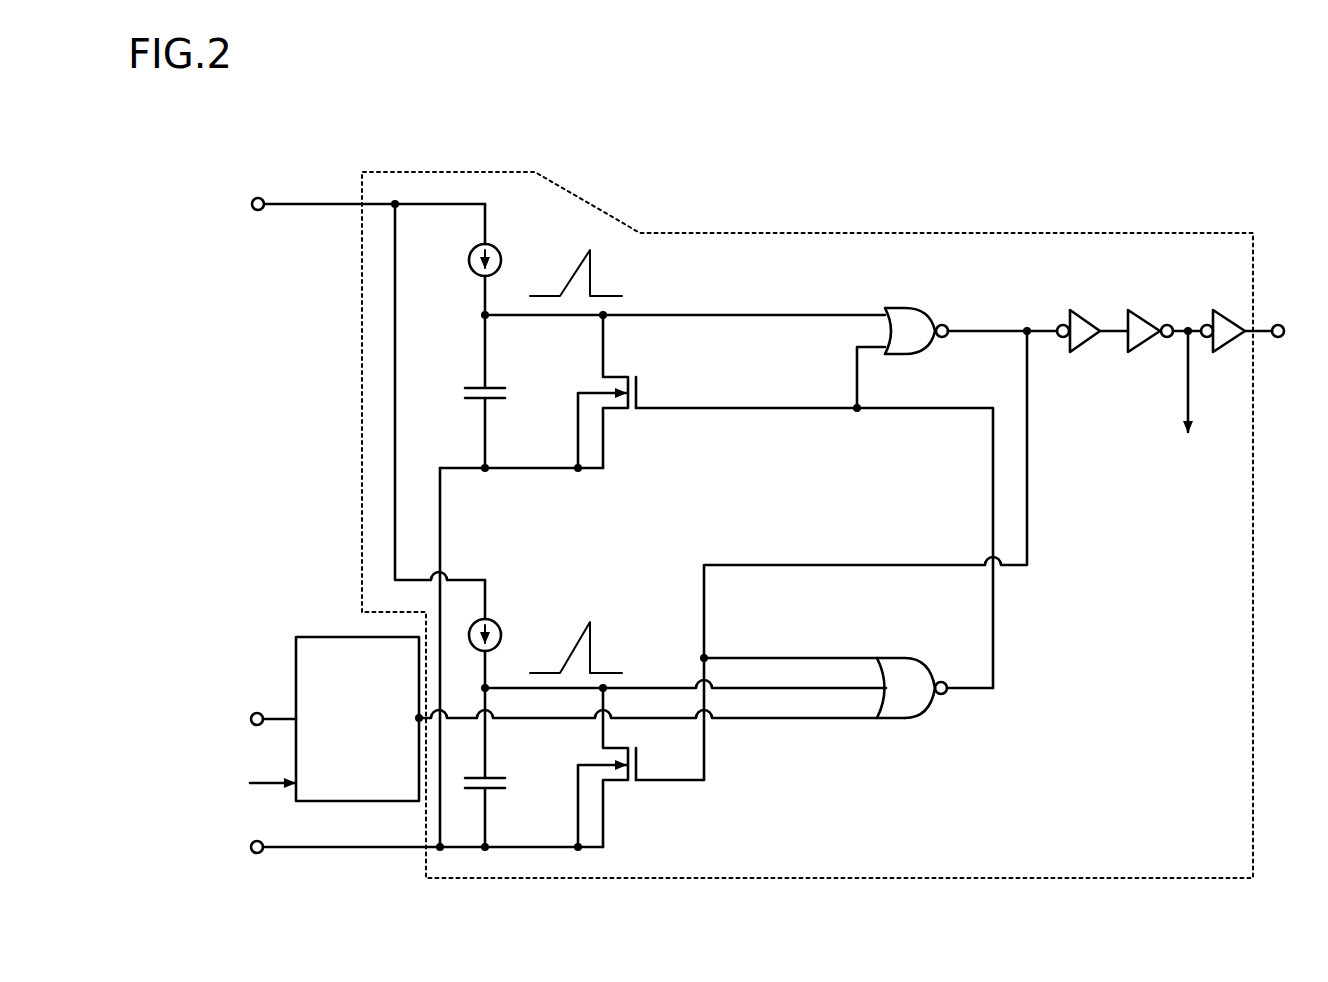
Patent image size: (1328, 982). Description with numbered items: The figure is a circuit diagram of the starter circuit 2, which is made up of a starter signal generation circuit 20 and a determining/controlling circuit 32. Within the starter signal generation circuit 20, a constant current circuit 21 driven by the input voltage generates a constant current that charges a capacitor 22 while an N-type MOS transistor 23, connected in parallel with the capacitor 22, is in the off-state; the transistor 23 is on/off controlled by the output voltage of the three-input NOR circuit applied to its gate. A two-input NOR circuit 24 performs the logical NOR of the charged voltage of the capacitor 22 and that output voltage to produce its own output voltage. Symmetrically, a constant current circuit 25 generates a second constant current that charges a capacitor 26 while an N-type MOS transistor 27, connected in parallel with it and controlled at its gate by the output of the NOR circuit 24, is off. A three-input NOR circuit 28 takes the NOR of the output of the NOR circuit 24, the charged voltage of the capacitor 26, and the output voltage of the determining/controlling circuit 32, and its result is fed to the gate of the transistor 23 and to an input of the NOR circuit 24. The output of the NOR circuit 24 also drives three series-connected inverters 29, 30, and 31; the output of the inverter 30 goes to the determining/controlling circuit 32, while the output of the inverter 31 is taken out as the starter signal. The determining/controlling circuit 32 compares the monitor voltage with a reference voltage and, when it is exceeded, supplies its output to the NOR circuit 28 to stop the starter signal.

The starter circuit 2 is at (1067, 203).
The starter signal generation circuit 20 is at (853, 233).
The constant current circuit 21 is at (488, 246).
The capacitor 22 is at (497, 390).
The N-type MOS transistor 23 is at (618, 382).
The two-input NOR circuit 24 is at (905, 308).
The constant current circuit 25 is at (488, 620).
The capacitor 26 is at (497, 780).
The N-type MOS transistor 27 is at (618, 756).
The three-input NOR circuit 28 is at (904, 718).
The inverter circuit 29 is at (1084, 310).
The inverter circuit 30 is at (1142, 310).
The inverter circuit 31 is at (1227, 310).
The determining/controlling circuit 32 is at (314, 637).